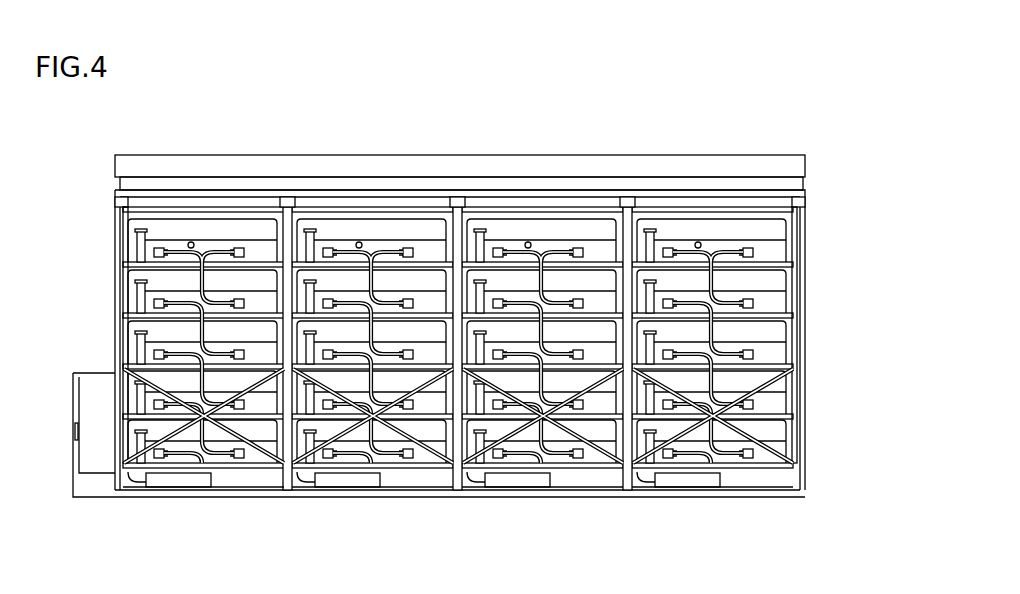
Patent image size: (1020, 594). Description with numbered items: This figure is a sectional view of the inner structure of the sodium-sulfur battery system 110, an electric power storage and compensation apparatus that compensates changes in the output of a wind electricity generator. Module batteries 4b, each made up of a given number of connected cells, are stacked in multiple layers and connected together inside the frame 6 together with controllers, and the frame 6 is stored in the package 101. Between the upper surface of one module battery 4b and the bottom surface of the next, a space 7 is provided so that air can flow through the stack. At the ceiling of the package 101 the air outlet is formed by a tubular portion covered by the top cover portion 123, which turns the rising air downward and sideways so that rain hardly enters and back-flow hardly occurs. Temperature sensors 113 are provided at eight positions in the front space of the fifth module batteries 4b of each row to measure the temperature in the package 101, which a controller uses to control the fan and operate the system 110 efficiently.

The sodium-sulfur battery system 110 is at (753, 97).
The top cover portion 123 is at (269, 163).
The temperature sensor 113 is at (191, 241).
The frame 6 is at (458, 197).
The package 101 is at (806, 252).
The module battery 4b is at (160, 232).
The space 7 is at (160, 320).